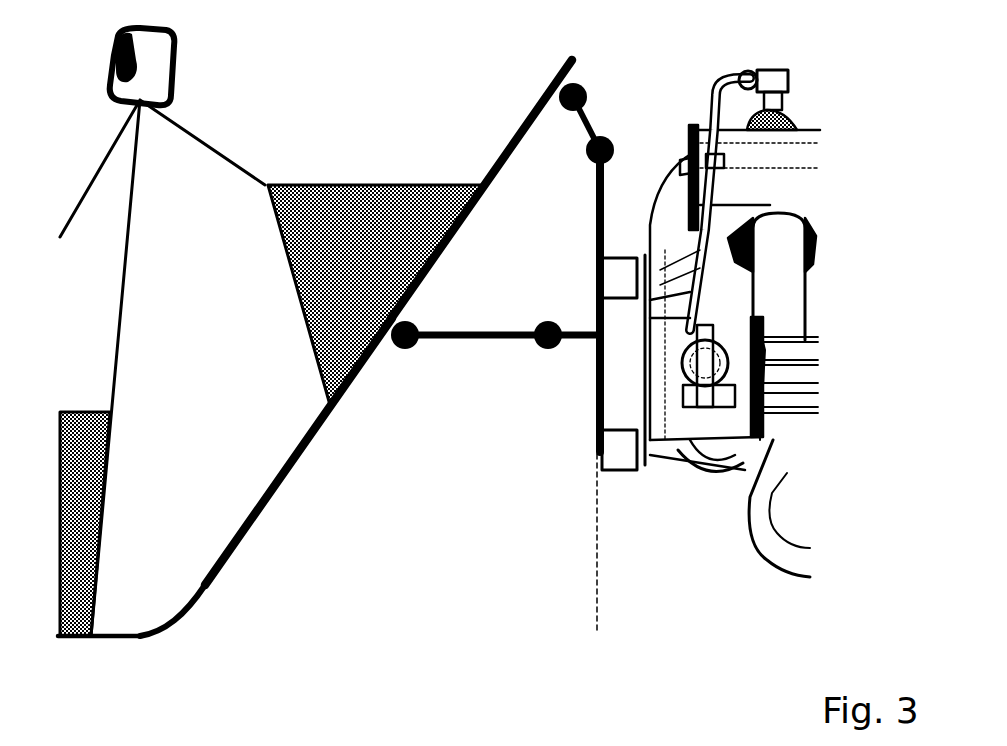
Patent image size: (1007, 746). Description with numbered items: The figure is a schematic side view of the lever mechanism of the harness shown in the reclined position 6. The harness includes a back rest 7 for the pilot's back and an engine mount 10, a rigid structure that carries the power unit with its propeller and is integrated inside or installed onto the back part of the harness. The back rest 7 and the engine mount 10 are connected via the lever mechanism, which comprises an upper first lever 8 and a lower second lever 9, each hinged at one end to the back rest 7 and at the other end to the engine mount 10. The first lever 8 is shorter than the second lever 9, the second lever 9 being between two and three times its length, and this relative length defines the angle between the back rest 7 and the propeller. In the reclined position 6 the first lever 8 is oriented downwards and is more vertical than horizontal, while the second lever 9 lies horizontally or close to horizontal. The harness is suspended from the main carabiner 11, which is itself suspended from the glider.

The reclined position 6 is at (313, 445).
The back rest 7 is at (477, 143).
The first lever 8 is at (577, 292).
The second lever 9 is at (306, 452).
The engine mount 10 is at (571, 157).
The main carabiner 11 is at (204, 74).